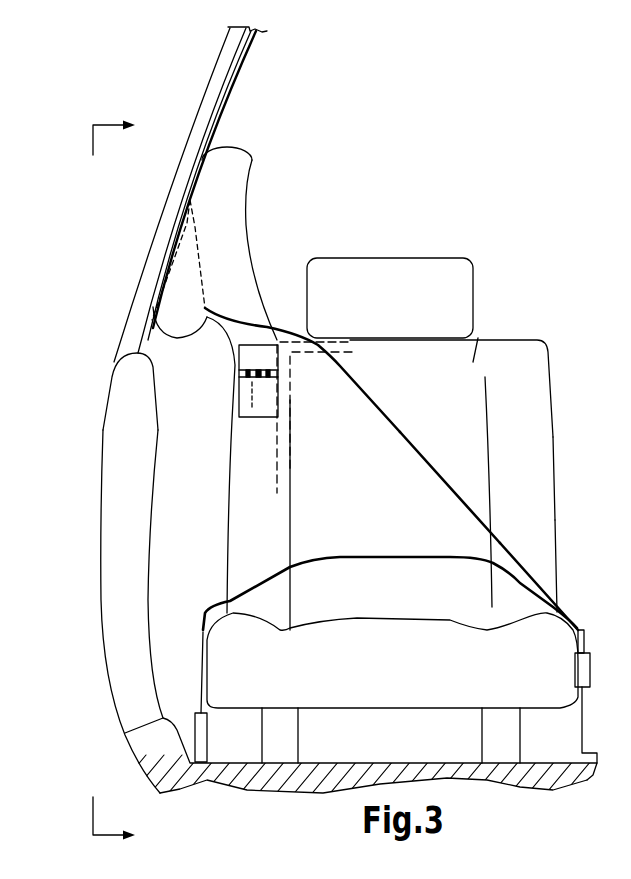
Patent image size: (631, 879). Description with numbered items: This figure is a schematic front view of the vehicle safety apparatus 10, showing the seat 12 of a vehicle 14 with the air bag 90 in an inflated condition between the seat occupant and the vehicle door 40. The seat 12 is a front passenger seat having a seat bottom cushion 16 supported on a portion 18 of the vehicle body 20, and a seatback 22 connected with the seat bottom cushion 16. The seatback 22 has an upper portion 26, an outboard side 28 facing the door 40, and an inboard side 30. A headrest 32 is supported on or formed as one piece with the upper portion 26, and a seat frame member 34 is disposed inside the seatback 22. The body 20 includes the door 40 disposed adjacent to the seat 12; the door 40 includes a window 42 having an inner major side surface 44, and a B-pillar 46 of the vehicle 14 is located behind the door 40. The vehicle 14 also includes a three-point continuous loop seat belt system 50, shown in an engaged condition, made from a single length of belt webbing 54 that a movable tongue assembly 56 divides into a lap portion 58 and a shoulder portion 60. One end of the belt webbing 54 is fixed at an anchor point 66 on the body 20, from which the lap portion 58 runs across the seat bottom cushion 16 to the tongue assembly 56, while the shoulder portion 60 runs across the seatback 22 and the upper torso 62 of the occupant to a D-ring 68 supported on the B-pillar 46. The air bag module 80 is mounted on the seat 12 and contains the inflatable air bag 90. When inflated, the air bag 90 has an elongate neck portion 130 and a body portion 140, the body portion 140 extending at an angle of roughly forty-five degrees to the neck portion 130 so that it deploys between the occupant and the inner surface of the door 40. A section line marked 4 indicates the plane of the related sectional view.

The section line 4- 4 is at (126, 479).
The vehicle safety apparatus 10 is at (357, 470).
The seat 12 is at (443, 442).
The vehicle 14 is at (553, 790).
The seat bottom cushion 16 is at (345, 657).
The portion 18 is at (492, 780).
The body 20 is at (445, 764).
The seatback 22 is at (552, 435).
The upper portion 26 is at (478, 338).
The outboard side 28 is at (228, 440).
The inboard side 30 is at (553, 480).
The headrest 32 is at (468, 260).
The seat frame member 34 is at (273, 477).
The door 40 is at (204, 99).
The window 42 is at (243, 68).
The inner major side surface 44 is at (228, 93).
The B-pillar 46 is at (366, 442).
The three-point continuous loop seat belt system 50 is at (497, 498).
The belt webbing 54 is at (510, 552).
The tongue assembly 56 is at (585, 643).
The lap portion 58 is at (527, 577).
The shoulder portion 60 is at (420, 442).
The upper torso 62 is at (590, 670).
The anchor point 66 is at (193, 745).
The D-ring 68 is at (193, 213).
The air bag module 80 is at (239, 375).
The air bag 90 is at (253, 160).
The neck portion 130 is at (285, 327).
The body portion 140 is at (231, 146).